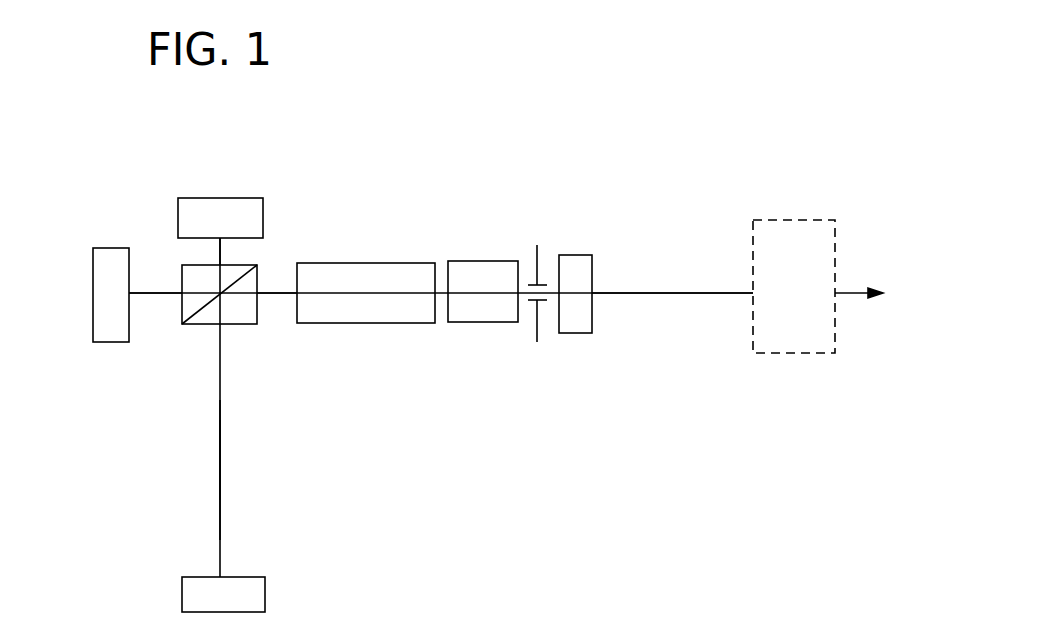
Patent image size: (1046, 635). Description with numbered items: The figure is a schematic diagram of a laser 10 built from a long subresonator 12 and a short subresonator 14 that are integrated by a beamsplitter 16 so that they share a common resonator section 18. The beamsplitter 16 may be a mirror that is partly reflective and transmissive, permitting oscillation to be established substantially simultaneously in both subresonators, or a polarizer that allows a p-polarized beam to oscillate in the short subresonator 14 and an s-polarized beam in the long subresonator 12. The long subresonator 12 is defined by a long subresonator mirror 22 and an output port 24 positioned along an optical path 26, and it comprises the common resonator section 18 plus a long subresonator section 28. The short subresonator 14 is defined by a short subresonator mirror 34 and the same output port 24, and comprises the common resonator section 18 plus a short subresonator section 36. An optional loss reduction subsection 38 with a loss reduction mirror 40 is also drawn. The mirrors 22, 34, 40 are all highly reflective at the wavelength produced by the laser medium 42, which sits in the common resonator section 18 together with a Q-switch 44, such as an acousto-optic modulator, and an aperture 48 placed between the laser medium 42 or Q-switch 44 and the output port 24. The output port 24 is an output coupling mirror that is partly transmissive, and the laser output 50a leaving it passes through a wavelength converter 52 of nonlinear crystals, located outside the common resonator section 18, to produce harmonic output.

The laser 10 is at (650, 148).
The long subresonator 12 is at (252, 472).
The short subresonator 14 is at (153, 262).
The beamsplitter 16 is at (212, 325).
The common resonator section 18 is at (442, 203).
The long subresonator mirror 22 is at (265, 590).
The output port 24 is at (582, 255).
The optical path 26 is at (275, 297).
The long subresonator section 28 is at (218, 468).
The short subresonator mirror 34 is at (93, 287).
The short subresonator section 36 is at (162, 297).
The loss reduction subsection 38 is at (220, 255).
The loss reduction mirror 40 is at (212, 197).
The laser medium 42 is at (398, 323).
The Q-switch 44 is at (482, 260).
The aperture 48 is at (538, 260).
The laser output 50a is at (693, 290).
The wavelength converter 52 is at (788, 220).